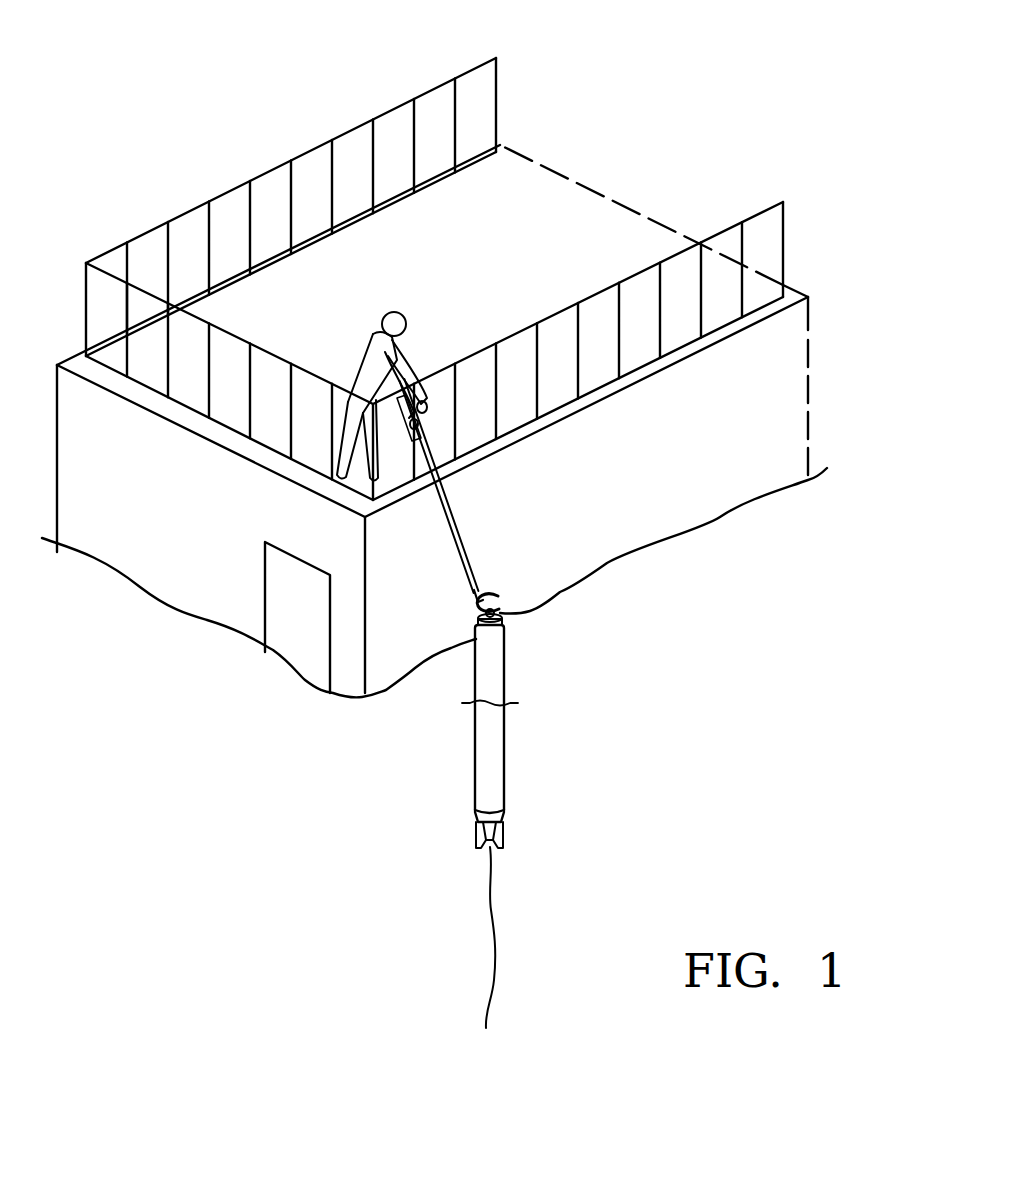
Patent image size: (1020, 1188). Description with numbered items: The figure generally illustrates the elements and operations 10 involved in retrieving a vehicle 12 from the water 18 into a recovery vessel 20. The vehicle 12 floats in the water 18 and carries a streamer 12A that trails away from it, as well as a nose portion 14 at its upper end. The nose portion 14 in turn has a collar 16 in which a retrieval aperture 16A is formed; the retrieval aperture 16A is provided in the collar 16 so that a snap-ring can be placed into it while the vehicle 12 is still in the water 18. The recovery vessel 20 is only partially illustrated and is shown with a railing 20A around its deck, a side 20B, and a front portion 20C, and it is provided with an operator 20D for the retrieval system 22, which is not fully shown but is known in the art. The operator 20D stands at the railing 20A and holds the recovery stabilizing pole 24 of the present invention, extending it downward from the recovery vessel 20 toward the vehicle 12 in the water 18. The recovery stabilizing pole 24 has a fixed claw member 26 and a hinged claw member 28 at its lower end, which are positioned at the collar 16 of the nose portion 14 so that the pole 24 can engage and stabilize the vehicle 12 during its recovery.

The elements and operations 10 is at (737, 96).
The vehicle 12 is at (537, 746).
The streamer 12A is at (487, 912).
The nose portion 14 is at (504, 630).
The collar 16 is at (503, 613).
The retrieval aperture 16A is at (503, 633).
The water 18 is at (750, 626).
The recovery vessel 20 is at (538, 136).
The railing 20A is at (590, 297).
The side 20B is at (663, 483).
The front portion 20C is at (178, 533).
The operator 20D is at (404, 313).
The retrieval system 22 is at (303, 627).
The recovery stabilizing pole 24 is at (470, 526).
The fixed claw member 26 is at (476, 609).
The hinged claw member 28 is at (492, 597).